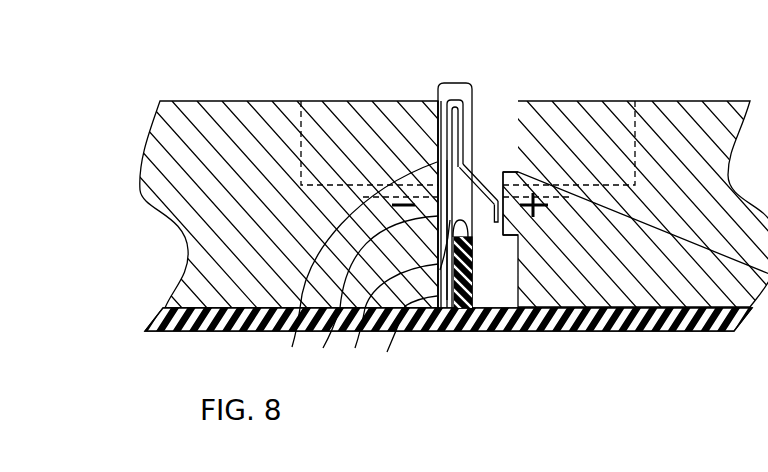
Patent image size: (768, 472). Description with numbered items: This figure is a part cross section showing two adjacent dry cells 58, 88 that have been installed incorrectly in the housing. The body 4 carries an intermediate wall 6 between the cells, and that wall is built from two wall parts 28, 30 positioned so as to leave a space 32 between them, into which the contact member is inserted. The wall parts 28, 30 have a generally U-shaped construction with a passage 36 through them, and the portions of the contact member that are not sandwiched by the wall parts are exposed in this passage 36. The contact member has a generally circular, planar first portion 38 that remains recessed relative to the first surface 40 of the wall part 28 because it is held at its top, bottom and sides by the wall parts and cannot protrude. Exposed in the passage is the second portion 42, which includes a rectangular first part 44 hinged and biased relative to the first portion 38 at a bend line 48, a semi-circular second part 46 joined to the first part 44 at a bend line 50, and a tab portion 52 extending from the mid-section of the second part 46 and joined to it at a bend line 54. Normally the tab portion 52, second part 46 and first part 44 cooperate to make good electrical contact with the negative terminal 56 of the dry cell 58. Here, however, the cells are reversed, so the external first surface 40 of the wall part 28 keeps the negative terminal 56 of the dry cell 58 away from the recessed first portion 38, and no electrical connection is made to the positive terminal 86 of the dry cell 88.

The body 4 is at (203, 338).
The intermediate wall 6 is at (455, 92).
The wall part 28 is at (407, 339).
The wall part 30 is at (470, 283).
The space 32 is at (453, 305).
The passage 36 is at (462, 287).
The first portion 38 is at (447, 140).
The first surface 40 is at (447, 140).
The second portion 42 is at (486, 143).
The first part 44 is at (466, 128).
The second part 46 is at (488, 188).
The bend line 48 is at (454, 104).
The bend line 50 is at (357, 267).
The tab portion 52 is at (484, 222).
The bend line 54 is at (508, 213).
The negative terminal 56 is at (374, 296).
The dry cell 58 is at (212, 130).
The positive terminal 86 is at (507, 205).
The dry cell 88 is at (660, 275).